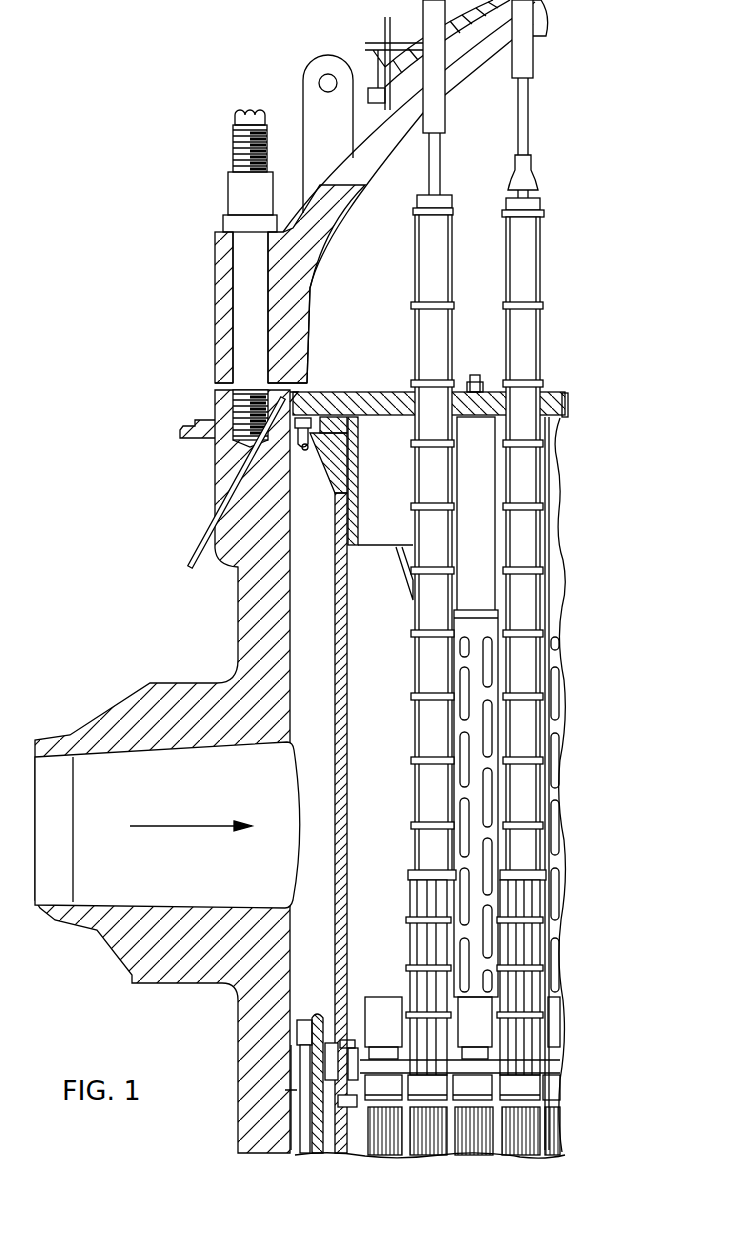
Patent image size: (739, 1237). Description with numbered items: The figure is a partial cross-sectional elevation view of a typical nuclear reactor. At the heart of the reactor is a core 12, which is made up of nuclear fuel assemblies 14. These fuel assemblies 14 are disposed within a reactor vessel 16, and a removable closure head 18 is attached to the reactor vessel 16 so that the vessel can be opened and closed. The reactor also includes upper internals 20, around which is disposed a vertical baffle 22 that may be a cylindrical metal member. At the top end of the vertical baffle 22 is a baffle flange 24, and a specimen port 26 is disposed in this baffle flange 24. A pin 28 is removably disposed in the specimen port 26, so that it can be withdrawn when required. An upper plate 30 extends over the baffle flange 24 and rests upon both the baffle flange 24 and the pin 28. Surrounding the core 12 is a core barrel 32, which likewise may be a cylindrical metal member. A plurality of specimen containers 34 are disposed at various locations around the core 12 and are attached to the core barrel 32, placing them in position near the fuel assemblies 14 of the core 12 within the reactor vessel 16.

The core 12 is at (457, 1141).
The nuclear fuel assemblies 14 is at (391, 1140).
The reactor vessel 16 is at (250, 637).
The removable closure head 18 is at (222, 337).
The upper internals 20 is at (567, 602).
The vertical baffle 22 is at (345, 738).
The baffle flange 24 is at (333, 472).
The specimen port 26 is at (306, 442).
The pin 28 is at (305, 438).
The upper plate 30 is at (357, 398).
The core barrel 32 is at (317, 1013).
The specimen containers 34 is at (290, 1090).